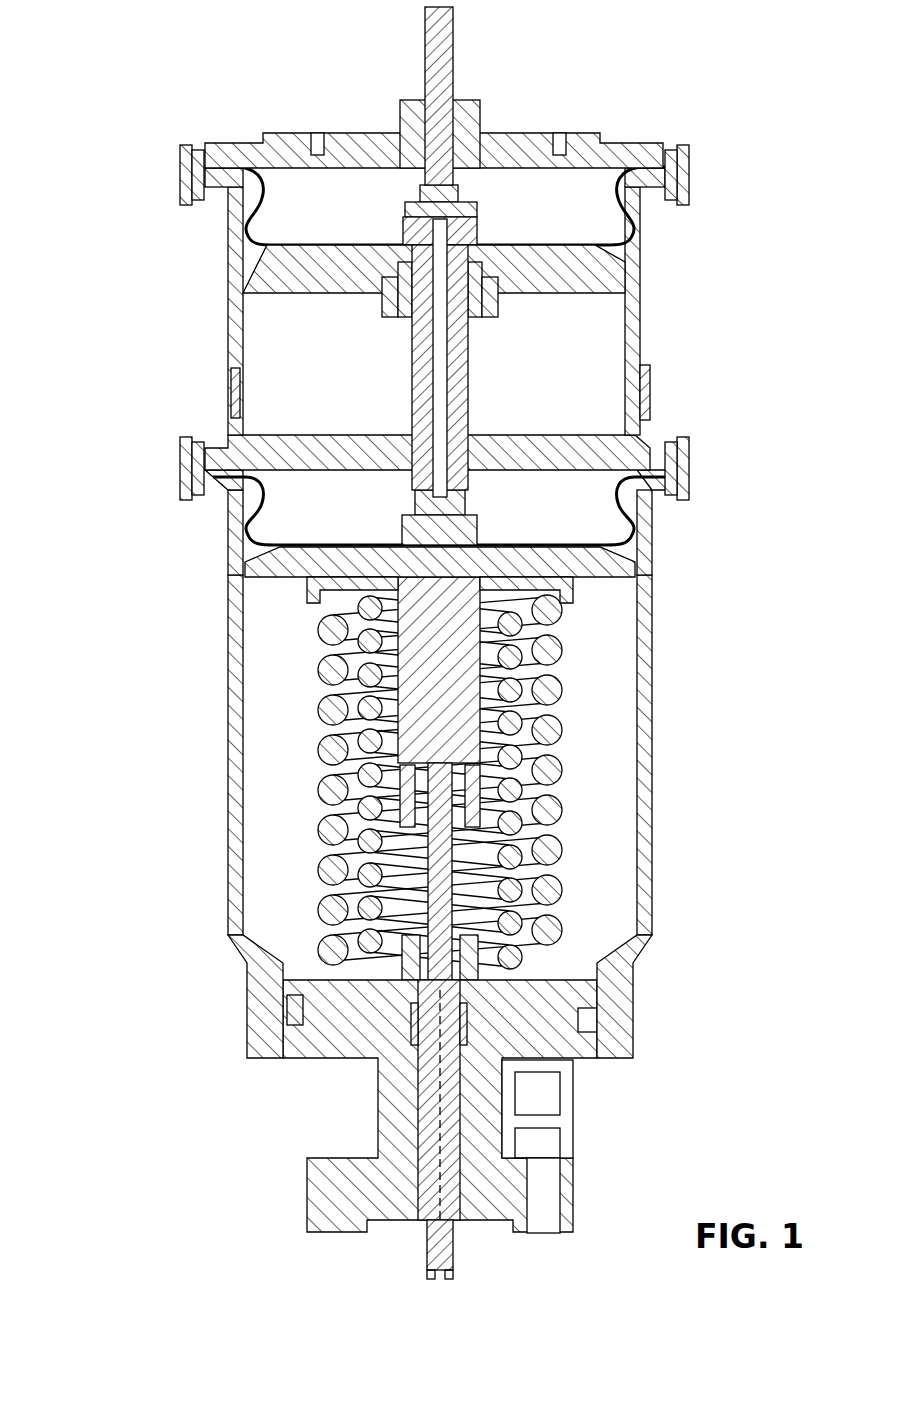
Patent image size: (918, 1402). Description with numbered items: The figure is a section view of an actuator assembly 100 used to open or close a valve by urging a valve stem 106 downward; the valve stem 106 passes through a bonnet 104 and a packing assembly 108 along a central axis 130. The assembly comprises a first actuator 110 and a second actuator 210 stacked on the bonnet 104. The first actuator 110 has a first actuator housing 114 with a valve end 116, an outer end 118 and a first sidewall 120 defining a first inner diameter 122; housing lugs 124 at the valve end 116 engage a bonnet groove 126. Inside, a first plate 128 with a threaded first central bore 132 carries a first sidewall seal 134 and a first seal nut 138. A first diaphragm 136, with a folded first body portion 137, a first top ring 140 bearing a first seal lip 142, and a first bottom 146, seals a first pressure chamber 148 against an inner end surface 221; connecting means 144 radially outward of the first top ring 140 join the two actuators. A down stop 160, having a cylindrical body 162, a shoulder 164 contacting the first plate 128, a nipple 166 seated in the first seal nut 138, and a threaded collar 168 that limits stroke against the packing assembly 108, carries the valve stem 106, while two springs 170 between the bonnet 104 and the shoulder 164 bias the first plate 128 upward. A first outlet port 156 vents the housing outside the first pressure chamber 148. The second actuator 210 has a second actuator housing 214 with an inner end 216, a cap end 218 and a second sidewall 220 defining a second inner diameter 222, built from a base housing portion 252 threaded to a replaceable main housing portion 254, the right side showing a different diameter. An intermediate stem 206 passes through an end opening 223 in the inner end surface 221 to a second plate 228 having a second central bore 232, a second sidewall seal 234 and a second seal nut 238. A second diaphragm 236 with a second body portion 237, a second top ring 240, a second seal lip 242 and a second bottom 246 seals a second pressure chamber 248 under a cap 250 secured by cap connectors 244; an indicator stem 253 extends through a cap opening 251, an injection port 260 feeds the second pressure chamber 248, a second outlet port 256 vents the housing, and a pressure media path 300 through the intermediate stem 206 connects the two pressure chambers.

The actuator assembly 100 is at (790, 275).
The bonnet 104 is at (378, 1078).
The valve stem 106 is at (452, 1232).
The packing assembly 108 is at (592, 1008).
The first actuator 110 is at (432, 816).
The first actuator housing 114 is at (232, 885).
The valve end 116 is at (688, 960).
The outer end 118 is at (413, 522).
The first sidewall 120 is at (235, 660).
The first inner diameter 122 is at (240, 688).
The housing lugs 124 is at (287, 1002).
The bonnet groove 126 is at (592, 1020).
The first plate 128 is at (642, 548).
The central axis 130 is at (440, 1122).
The first central bore 132 is at (318, 630).
The first sidewall seal 134 is at (642, 575).
The first diaphragm 136 is at (240, 545).
The first body portion 137 is at (265, 500).
The first seal nut 138 is at (470, 510).
The first top ring 140 is at (662, 435).
The first seal lip 142 is at (672, 445).
The connecting means 144 is at (180, 462).
The first bottom 146 is at (347, 520).
The first pressure chamber 148 is at (260, 445).
The first outlet port 156 is at (645, 850).
The down stop 160 is at (482, 735).
The cylindrical body 162 is at (470, 690).
The shoulder 164 is at (575, 625).
The nipple 166 is at (465, 535).
The threaded collar 168 is at (480, 795).
The springs 170 is at (335, 908).
The intermediate stem 206 is at (462, 343).
The second actuator 210 is at (688, 245).
The second actuator housing 214 is at (642, 330).
The inner end 216 is at (184, 385).
The cap end 218 is at (424, 301).
The second sidewall 220 is at (235, 215).
The inner end surface 221 is at (500, 440).
The second inner diameter 222 is at (245, 300).
The end opening 223 is at (430, 430).
The second plate 228 is at (560, 295).
The second central bore 232 is at (392, 290).
The second sidewall seal 234 is at (640, 275).
The second diaphragm 236 is at (608, 240).
The second body portion 237 is at (265, 200).
The second seal nut 238 is at (478, 210).
The second top ring 240 is at (662, 165).
The second seal lip 242 is at (659, 165).
The cap connectors 244 is at (180, 150).
The second bottom 246 is at (318, 245).
The second pressure chamber 248 is at (282, 170).
The cap 250 is at (270, 140).
The cap opening 251 is at (415, 135).
The base housing portion 252 is at (652, 380).
The indicator stem 253 is at (437, 28).
The main housing portion 254 is at (240, 350).
The second outlet port 256 is at (240, 420).
The injection port 260 is at (558, 135).
The pressure media path 300 is at (445, 372).